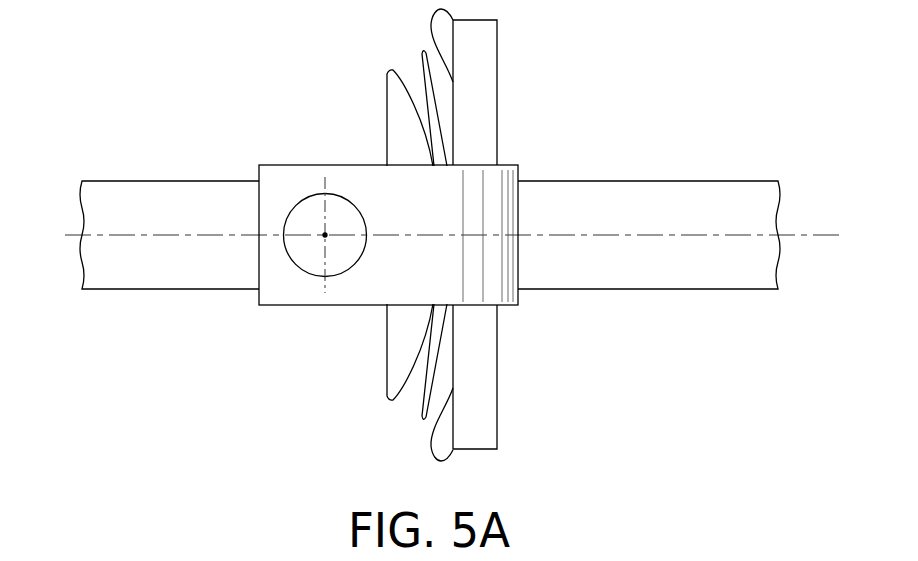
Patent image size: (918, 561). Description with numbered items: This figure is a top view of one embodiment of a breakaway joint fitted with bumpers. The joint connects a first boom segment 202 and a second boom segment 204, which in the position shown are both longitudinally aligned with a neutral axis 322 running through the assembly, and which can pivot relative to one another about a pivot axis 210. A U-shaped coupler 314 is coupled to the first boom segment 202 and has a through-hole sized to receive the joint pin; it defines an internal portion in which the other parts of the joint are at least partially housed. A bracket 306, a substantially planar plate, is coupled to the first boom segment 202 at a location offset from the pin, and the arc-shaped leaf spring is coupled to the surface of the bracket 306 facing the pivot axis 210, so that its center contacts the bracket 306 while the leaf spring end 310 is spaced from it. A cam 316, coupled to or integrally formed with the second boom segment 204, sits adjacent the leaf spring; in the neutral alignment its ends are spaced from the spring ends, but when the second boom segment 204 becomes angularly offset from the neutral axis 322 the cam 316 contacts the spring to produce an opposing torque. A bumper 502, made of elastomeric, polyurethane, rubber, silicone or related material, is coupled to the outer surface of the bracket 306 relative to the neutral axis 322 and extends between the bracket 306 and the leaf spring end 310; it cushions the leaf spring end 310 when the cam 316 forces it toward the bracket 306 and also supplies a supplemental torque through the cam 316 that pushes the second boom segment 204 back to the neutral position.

The first boom segment 202 is at (712, 187).
The second boom segment 204 is at (132, 187).
The pivot axis 210 is at (325, 235).
The bracket 306 is at (487, 80).
The first leaf spring end 310 is at (430, 95).
The U-shaped coupler 314 is at (277, 172).
The cam 316 is at (393, 347).
The neutral axis 322 is at (812, 233).
The bumper 502 is at (432, 32).